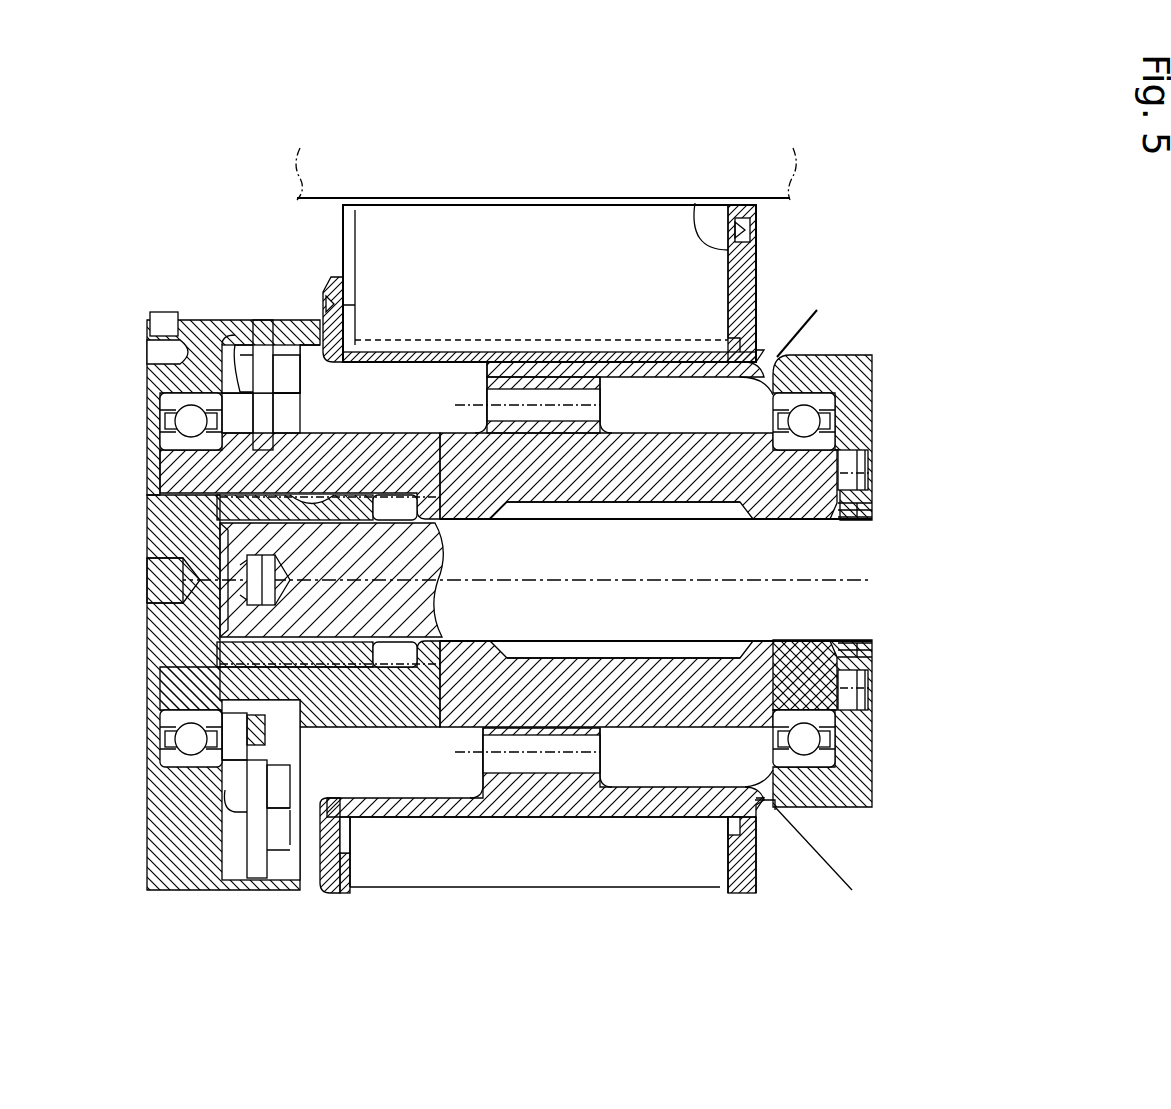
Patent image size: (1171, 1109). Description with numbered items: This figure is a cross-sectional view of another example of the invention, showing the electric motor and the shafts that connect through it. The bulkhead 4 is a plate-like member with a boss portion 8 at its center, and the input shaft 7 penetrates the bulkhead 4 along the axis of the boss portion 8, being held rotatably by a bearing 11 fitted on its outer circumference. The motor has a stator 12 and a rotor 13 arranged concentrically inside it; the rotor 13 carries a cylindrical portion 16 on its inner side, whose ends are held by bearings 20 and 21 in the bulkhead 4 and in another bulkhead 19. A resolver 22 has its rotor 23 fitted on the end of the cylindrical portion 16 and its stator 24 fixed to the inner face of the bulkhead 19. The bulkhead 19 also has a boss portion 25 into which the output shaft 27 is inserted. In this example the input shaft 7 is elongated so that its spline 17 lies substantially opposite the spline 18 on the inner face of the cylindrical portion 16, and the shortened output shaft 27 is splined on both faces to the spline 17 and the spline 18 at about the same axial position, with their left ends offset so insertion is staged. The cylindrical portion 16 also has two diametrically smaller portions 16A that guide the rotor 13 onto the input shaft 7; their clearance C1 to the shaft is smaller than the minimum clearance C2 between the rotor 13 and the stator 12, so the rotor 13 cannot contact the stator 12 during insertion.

The stator 12 is at (790, 164).
The rotor 13 is at (566, 326).
The minimum clearance C2 is at (745, 242).
The boss portion 8 is at (826, 373).
The bulkhead 4 is at (855, 358).
The bearing 20 is at (830, 405).
The bearing 11 is at (850, 518).
The diametrically smaller portion 16A is at (505, 521).
The clearance C1 is at (757, 521).
The input shaft 7 is at (634, 563).
The cylindrical portion 16 is at (617, 447).
The spline 18 is at (310, 502).
The spline 17 is at (360, 510).
The another bulkhead 19 is at (150, 378).
The bearing 21 is at (165, 449).
The stator 24 is at (284, 373).
The rotor 23 is at (284, 415).
The output shaft 27 is at (175, 636).
The boss portion 25 is at (150, 748).
The resolver 22 is at (317, 781).